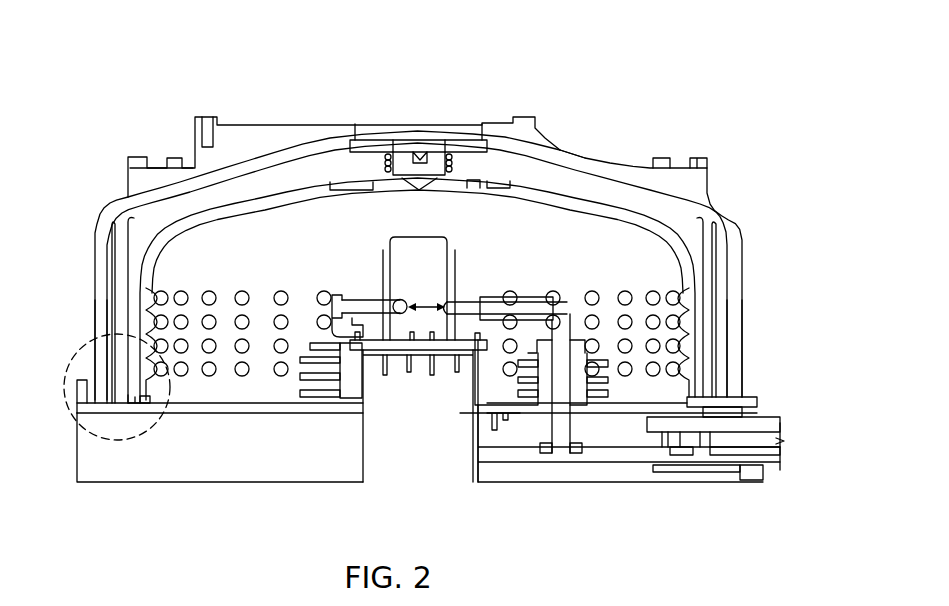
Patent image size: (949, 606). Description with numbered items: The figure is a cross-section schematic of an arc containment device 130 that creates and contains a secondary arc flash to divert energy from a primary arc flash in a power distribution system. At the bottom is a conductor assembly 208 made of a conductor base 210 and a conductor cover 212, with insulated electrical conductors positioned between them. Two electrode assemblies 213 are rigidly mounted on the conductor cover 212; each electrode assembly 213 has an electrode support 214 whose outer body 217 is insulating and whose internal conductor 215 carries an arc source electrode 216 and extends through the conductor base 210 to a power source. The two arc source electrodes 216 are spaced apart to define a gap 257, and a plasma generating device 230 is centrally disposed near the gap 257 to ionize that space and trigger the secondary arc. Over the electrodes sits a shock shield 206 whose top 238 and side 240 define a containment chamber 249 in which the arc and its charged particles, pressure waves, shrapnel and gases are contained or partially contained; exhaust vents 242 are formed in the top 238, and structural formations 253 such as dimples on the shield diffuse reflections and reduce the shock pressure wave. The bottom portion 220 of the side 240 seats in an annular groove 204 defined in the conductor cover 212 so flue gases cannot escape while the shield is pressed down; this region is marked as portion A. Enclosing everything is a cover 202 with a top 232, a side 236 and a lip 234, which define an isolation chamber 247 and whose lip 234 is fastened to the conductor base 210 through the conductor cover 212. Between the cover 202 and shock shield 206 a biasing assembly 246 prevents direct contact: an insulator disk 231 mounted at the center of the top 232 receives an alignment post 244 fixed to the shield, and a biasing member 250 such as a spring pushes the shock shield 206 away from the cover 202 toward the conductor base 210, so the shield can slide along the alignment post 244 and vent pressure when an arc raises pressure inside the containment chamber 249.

The arc containment device 130 is at (170, 56).
The cover 202 is at (313, 124).
The isolation chamber 247 is at (190, 165).
The top 232 is at (580, 152).
The top 238 is at (580, 205).
The shock shield 206 is at (205, 200).
The biasing member 250 is at (472, 140).
The insulator disk 231 is at (405, 150).
The biasing assembly 246 is at (450, 153).
The alignment post 244 is at (432, 190).
The exhaust vents 242 is at (475, 183).
The containment chamber 249 is at (596, 255).
The structural formations 253 is at (143, 300).
The side 240 is at (716, 312).
The side 236 is at (745, 335).
The lip 234 is at (757, 400).
The annular groove 204 is at (96, 340).
The bottom portion 220 is at (78, 380).
The conductor cover 212 is at (77, 402).
The internal conductor 215 is at (165, 412).
The conductor base 210 is at (305, 460).
The plasma generating device 230 is at (408, 362).
The gap 257 is at (430, 300).
The arc source electrode 216 is at (372, 300).
The electrode assembly 213 is at (312, 343).
The electrode support 214 is at (300, 385).
The outer body 217 is at (620, 470).
The conductor assembly 208 is at (772, 463).
The portion A is at (140, 442).